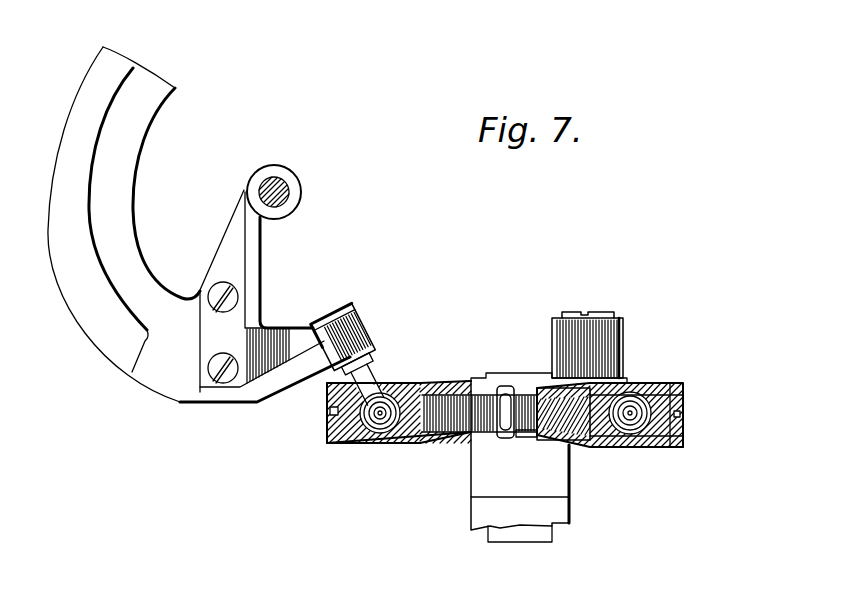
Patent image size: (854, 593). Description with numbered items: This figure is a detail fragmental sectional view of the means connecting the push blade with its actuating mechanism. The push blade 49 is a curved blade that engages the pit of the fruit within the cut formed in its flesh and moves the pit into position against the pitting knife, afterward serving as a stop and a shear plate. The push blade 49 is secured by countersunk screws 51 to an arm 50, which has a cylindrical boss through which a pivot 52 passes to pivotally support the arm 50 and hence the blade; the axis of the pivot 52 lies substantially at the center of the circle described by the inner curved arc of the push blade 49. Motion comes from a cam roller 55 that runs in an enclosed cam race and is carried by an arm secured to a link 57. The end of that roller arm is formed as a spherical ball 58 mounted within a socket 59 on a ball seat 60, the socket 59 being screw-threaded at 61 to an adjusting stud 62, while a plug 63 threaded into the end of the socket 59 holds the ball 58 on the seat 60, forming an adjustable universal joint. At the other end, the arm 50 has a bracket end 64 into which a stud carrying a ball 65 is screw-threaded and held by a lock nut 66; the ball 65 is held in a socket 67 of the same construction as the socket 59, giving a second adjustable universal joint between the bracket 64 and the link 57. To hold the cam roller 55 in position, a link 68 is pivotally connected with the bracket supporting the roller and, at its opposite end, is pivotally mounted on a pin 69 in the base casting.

The push blade 49 is at (122, 204).
The arm 50 is at (254, 260).
The countersunk screws 51 is at (215, 298).
The pivot 52 is at (290, 191).
The cam roller 55 is at (624, 340).
The link 57 is at (525, 435).
The spherical ball 58 is at (630, 430).
The socket 59 is at (650, 448).
The ball seat 60 is at (603, 428).
The screw threads 61 is at (571, 435).
The adjusting stud 62 is at (504, 385).
The plug 63 is at (686, 396).
The bracket end 64 is at (294, 386).
The ball 65 is at (383, 422).
The lock nut 66 is at (376, 352).
The socket 67 is at (401, 442).
The link 68 is at (538, 376).
The pin 69 is at (520, 535).